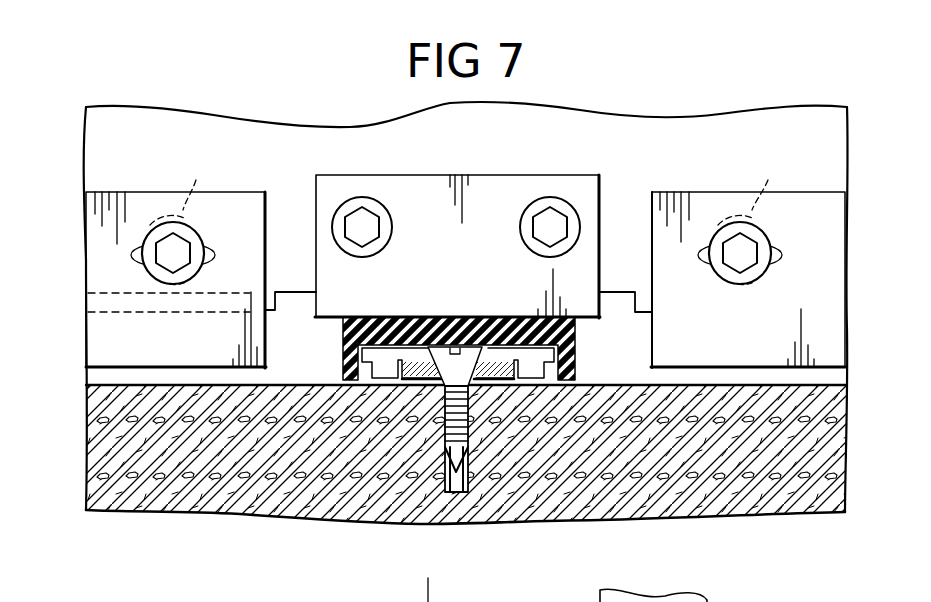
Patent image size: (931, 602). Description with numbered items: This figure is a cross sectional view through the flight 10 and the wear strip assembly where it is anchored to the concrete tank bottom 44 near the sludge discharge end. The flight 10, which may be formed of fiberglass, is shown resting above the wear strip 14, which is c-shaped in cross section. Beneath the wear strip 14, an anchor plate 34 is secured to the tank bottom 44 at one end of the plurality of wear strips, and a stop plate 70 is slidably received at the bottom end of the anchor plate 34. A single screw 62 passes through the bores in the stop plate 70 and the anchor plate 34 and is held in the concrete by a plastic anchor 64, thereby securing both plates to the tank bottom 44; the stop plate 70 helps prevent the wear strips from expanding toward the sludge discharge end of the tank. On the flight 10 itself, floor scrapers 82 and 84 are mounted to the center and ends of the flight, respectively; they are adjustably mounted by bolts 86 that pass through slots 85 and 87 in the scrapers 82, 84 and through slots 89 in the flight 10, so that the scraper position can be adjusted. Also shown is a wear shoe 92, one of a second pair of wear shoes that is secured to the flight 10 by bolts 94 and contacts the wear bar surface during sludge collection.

The flight 10 is at (489, 151).
The wear strip 14 is at (578, 340).
The anchor plate 34 is at (416, 384).
The tank bottom 44 is at (698, 482).
The screw 62 is at (470, 432).
The plastic anchor 64 is at (470, 483).
The stop plate 70 is at (503, 376).
The floor scraper 82 is at (187, 352).
The floor scraper 84 is at (702, 347).
The slot 85 is at (208, 255).
The bolt 86 is at (164, 240).
The slot 87 is at (778, 255).
The slot 89 is at (182, 220).
The wear shoe 92 is at (458, 279).
The bolt 94 is at (560, 205).